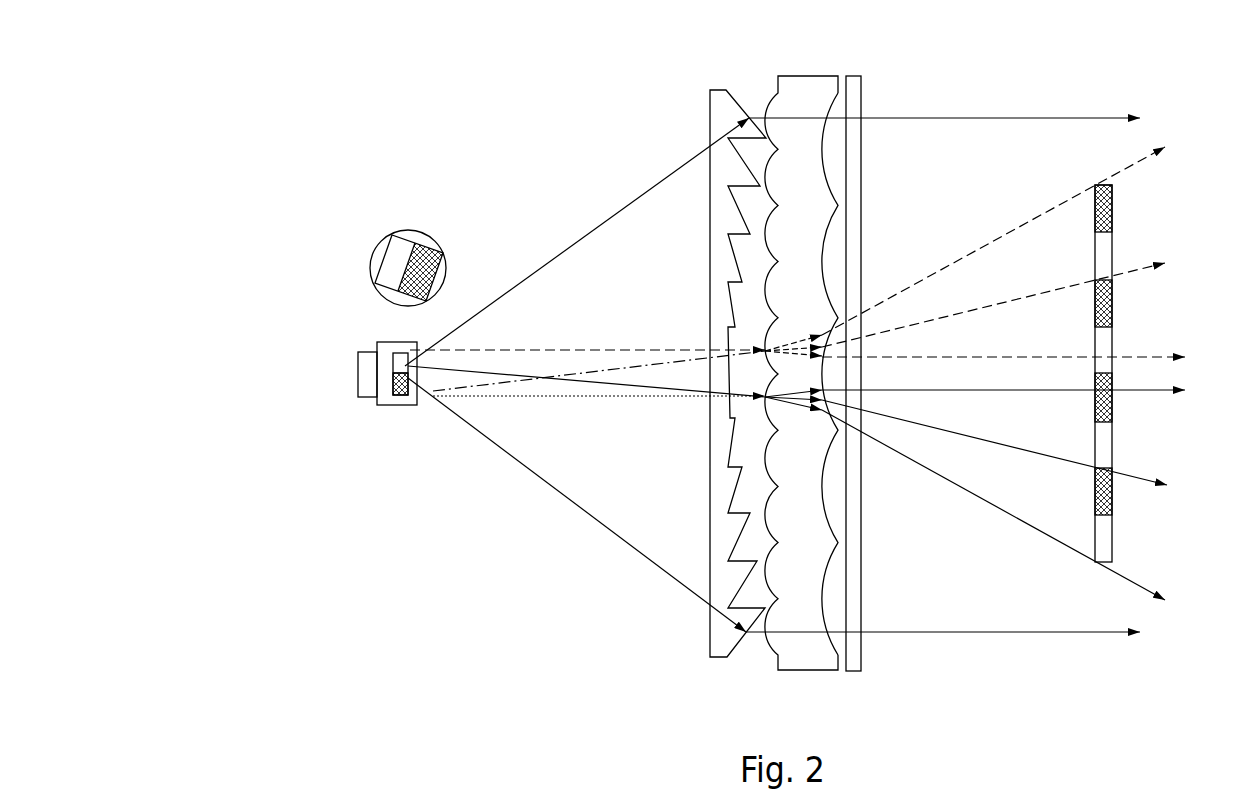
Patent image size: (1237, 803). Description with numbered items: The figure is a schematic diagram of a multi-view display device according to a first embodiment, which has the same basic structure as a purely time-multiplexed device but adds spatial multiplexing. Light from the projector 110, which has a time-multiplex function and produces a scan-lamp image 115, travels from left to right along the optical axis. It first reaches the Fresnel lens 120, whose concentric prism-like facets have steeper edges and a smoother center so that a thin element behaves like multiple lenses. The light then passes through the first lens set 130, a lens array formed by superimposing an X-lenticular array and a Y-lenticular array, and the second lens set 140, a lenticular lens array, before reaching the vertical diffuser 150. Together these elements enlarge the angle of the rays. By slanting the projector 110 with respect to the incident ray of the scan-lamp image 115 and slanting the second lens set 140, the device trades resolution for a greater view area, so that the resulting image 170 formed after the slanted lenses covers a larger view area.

The projector 110 is at (383, 342).
The scan-lamp image 115 is at (372, 250).
The Fresnel lens 120 is at (710, 637).
The first lens set 130 is at (773, 103).
The second lens set 140 is at (833, 638).
The vertical diffuser 150 is at (853, 87).
The image 170 is at (1112, 218).